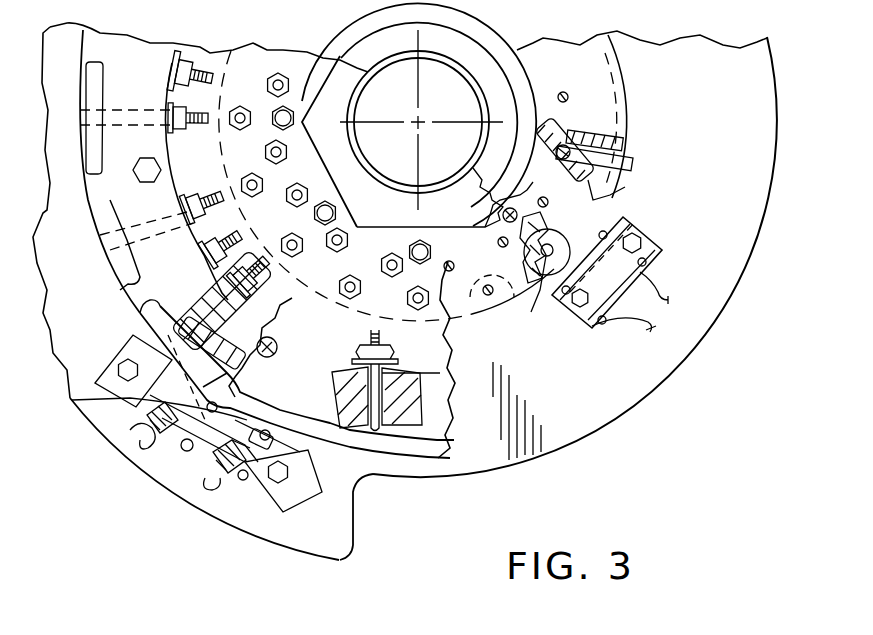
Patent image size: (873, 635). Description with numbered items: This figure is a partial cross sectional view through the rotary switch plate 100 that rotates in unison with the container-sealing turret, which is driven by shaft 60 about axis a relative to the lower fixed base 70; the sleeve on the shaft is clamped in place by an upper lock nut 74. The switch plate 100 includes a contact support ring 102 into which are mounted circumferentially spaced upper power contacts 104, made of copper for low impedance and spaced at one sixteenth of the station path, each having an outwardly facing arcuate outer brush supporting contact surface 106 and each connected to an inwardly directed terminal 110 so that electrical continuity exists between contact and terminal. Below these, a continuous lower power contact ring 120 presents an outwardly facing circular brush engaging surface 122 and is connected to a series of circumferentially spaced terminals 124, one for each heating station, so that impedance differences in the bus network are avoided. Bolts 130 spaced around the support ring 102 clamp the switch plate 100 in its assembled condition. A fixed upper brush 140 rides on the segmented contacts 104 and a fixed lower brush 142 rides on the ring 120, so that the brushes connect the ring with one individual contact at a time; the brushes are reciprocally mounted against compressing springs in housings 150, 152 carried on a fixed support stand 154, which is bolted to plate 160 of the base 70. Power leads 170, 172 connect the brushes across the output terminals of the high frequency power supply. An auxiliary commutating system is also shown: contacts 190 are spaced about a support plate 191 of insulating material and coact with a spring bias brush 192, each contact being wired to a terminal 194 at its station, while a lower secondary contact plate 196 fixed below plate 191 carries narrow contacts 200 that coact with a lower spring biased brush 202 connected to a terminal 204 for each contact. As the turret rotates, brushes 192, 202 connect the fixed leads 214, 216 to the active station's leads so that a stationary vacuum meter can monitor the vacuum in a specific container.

The shaft 60 is at (367, 134).
The axis a is at (421, 119).
The lower fixed base 70 is at (567, 440).
The upper lock nut 74 is at (447, 227).
The rotary switch plate 100 is at (425, 462).
The contact support ring 102 is at (123, 202).
The upper power contacts 104 is at (142, 310).
The arcuate outer brush supporting contact surfaces 106 is at (107, 260).
The terminal 110 is at (195, 130).
The lower power contact ring 120 is at (398, 451).
The circular brush engaging surface 122 is at (340, 445).
The terminals 124 is at (203, 52).
The bolts 130 is at (140, 158).
The fixed upper brush 140 is at (95, 401).
The fixed lower brush 142 is at (254, 492).
The housing 150 is at (118, 420).
The housing 152 is at (195, 468).
The fixed support stand 154 is at (283, 492).
The plate 160 is at (338, 563).
The power lead 170 is at (143, 442).
The power lead 172 is at (215, 482).
The contacts 190 is at (552, 275).
The support plate 191 is at (531, 314).
The spring bias brush 192 is at (592, 326).
The terminal 194 is at (297, 258).
The lower secondary contact plate 196 is at (623, 143).
The narrow contacts 200 is at (603, 160).
The lower spring biased brush 202 is at (622, 222).
The terminal 204 is at (390, 253).
The fixed lead 214 is at (655, 321).
The fixed lead 216 is at (660, 290).